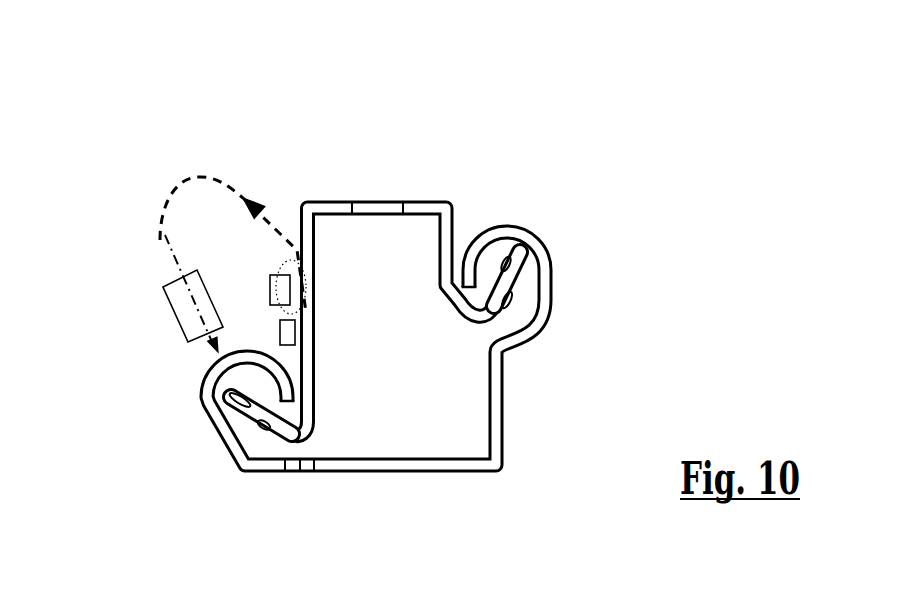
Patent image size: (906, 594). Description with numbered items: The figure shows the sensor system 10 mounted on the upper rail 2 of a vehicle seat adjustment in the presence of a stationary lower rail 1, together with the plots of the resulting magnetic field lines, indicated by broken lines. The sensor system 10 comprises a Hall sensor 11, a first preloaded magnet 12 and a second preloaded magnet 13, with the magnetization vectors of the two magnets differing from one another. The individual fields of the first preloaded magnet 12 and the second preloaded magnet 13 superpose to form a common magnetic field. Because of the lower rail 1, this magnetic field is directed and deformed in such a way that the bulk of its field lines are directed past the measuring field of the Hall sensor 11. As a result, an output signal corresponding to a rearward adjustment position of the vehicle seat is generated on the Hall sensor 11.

The lower rail 1 is at (343, 468).
The upper rail 2 is at (310, 200).
The sensor system 10 is at (130, 186).
The Hall sensor 11 is at (292, 335).
The first preloaded magnet 12 is at (173, 308).
The second preloaded magnet 13 is at (287, 288).